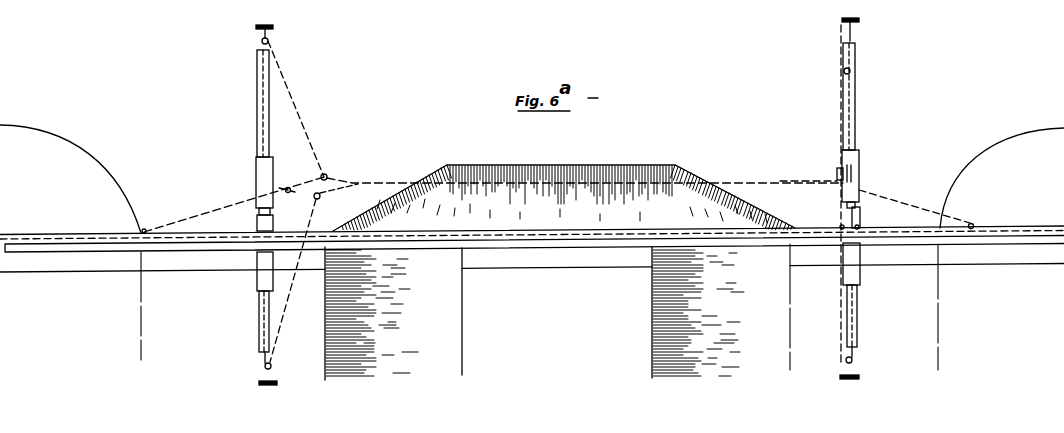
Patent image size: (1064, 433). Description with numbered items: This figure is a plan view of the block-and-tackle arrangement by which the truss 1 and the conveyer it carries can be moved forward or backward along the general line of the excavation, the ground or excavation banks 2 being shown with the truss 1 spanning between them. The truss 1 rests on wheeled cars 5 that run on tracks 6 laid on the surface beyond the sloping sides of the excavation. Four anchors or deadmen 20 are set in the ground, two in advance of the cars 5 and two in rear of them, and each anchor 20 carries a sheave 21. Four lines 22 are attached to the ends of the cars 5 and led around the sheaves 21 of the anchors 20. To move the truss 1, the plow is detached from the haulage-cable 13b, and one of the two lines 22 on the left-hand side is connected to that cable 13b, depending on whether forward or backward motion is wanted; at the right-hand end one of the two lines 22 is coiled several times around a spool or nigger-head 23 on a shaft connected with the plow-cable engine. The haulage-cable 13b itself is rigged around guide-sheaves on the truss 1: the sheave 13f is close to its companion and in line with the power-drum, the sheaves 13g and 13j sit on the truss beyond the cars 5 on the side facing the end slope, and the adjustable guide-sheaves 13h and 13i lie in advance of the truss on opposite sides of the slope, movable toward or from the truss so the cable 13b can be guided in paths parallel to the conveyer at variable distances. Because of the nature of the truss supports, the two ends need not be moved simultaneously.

The truss 1 is at (913, 238).
The supporting piers 2 is at (532, 312).
The cars or trucks 5 is at (870, 273).
The tracks 6 is at (870, 320).
The anchors or deadmen 20 is at (846, 388).
The sheave 21 is at (865, 360).
The lines 22 is at (842, 337).
The spool or nigger-head 23 is at (842, 173).
The haulage-cable 13b is at (732, 176).
The guide-sheave 13g is at (233, 205).
The guide-sheave 13i is at (830, 182).
The guide-sheave 13j is at (977, 220).
The guide-sheave 13f is at (840, 225).
The guide-sheave 13h is at (860, 223).